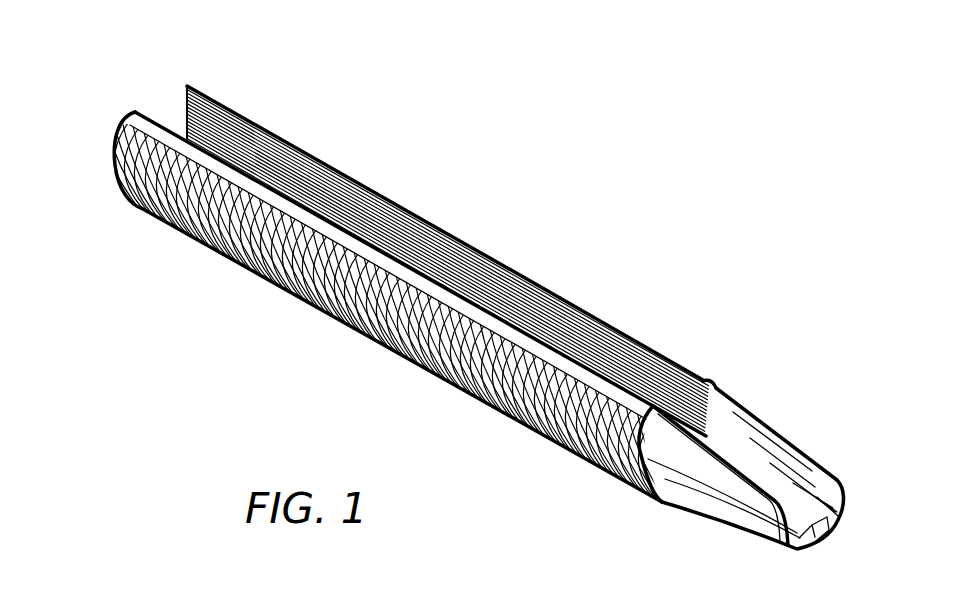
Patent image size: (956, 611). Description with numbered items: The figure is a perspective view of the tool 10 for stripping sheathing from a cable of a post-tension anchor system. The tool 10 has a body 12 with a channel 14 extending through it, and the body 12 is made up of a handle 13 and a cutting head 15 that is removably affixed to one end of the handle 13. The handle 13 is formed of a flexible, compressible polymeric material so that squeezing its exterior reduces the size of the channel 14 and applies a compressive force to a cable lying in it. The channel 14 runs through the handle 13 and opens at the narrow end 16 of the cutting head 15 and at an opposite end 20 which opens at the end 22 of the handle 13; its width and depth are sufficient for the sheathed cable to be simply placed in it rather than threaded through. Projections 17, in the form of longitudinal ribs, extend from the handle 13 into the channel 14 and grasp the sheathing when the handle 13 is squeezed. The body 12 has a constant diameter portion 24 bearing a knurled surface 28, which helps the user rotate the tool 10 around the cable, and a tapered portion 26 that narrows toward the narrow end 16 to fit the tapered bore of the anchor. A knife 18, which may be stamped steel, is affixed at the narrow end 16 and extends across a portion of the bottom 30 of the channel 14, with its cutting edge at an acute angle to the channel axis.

The tool 10 is at (573, 250).
The body 12 is at (410, 208).
The handle 13 is at (617, 325).
The channel 14 is at (243, 125).
The cutting head 15 is at (747, 407).
The narrow end 16 is at (818, 497).
The projections 17 is at (300, 168).
The knife 18 is at (828, 537).
The opposite end 20 is at (163, 102).
The end of the handle 22 is at (113, 153).
The constant diameter portion 24 is at (480, 235).
The tapered portion 26 is at (800, 450).
The knurled surface 28 is at (350, 323).
The bottom of channel 30 is at (732, 467).